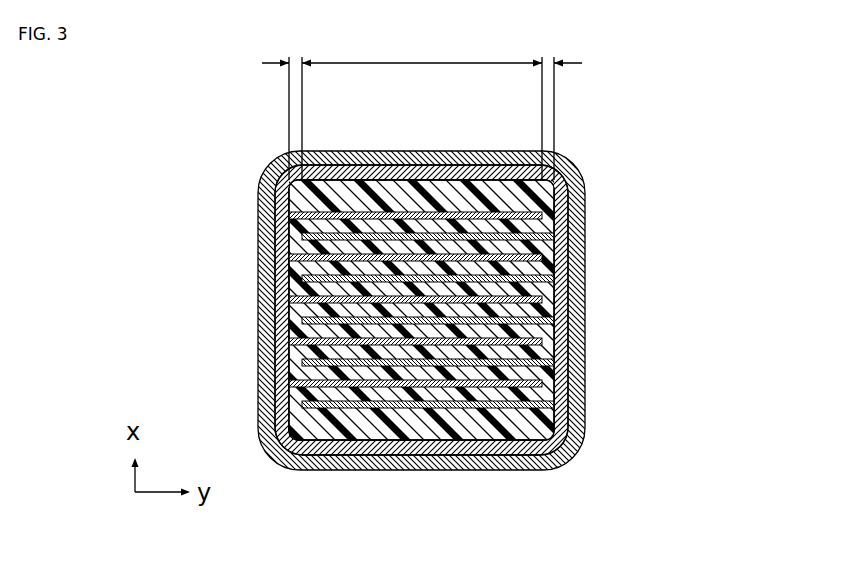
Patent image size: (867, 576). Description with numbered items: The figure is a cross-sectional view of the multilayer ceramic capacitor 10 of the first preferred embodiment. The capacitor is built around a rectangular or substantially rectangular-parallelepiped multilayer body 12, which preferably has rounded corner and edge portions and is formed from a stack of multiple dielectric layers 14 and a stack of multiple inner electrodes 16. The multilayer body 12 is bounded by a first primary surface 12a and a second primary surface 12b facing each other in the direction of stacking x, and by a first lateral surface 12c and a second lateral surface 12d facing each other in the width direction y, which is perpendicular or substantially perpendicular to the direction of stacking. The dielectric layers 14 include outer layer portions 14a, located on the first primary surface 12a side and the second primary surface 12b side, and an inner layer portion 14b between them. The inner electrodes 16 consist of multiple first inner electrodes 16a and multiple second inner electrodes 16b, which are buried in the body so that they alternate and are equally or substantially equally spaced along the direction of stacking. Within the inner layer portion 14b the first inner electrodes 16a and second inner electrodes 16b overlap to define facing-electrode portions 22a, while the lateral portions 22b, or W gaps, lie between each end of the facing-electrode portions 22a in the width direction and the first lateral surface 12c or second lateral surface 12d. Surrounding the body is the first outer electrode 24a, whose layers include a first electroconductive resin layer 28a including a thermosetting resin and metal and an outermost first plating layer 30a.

The multilayer ceramic capacitor 10 is at (214, 122).
The multilayer body 12 is at (420, 313).
The first primary surface 12a is at (354, 174).
The second primary surface 12b is at (490, 441).
The first lateral surface 12c is at (290, 320).
The second lateral surface 12d is at (556, 322).
The dielectric layers 14 is at (420, 313).
The outer layer portions 14a is at (427, 196).
The inner layer portion 14b is at (508, 288).
The inner electrodes 16 is at (770, 447).
The first inner electrodes 16a is at (300, 216).
The second inner electrodes 16b is at (548, 279).
The facing-electrode portions 22a is at (422, 104).
The lateral portions 22b is at (422, 103).
The first outer electrode 24a is at (581, 153).
The first electroconductive resin layer 28a is at (562, 222).
The first plating layer 30a is at (578, 200).